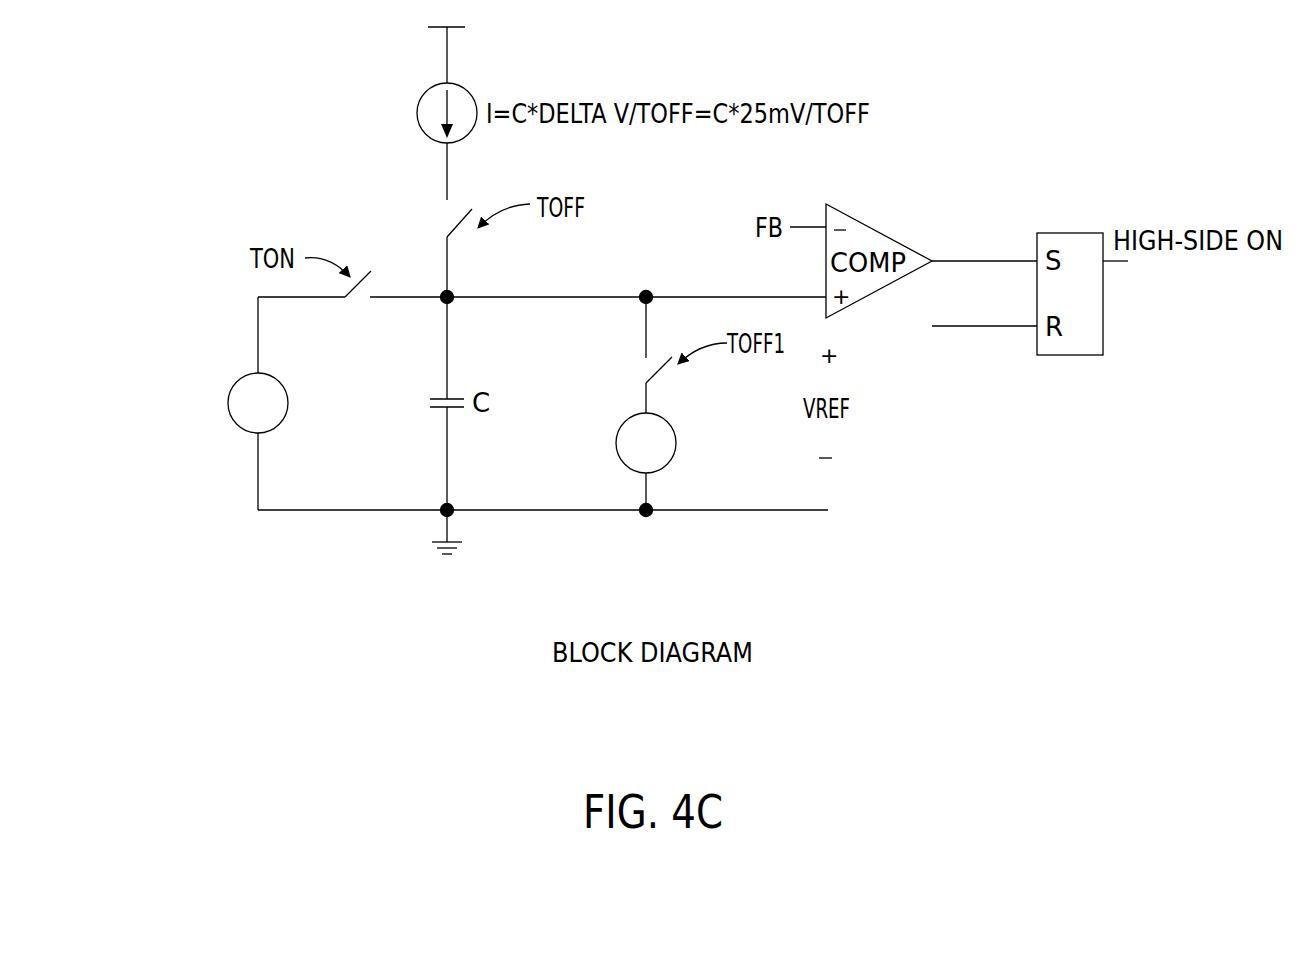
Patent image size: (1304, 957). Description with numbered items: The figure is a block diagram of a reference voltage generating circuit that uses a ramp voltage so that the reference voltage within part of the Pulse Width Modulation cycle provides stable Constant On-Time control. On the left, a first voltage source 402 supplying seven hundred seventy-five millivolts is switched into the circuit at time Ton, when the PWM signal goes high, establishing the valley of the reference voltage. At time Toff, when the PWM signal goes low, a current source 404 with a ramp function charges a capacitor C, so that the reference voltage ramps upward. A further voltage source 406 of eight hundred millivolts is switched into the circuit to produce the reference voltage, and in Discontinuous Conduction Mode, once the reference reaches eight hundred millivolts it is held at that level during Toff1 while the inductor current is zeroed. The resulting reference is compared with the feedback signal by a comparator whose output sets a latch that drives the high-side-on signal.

The first voltage source 402 is at (246, 376).
The current source 404 is at (417, 112).
The voltage source 406 is at (616, 440).